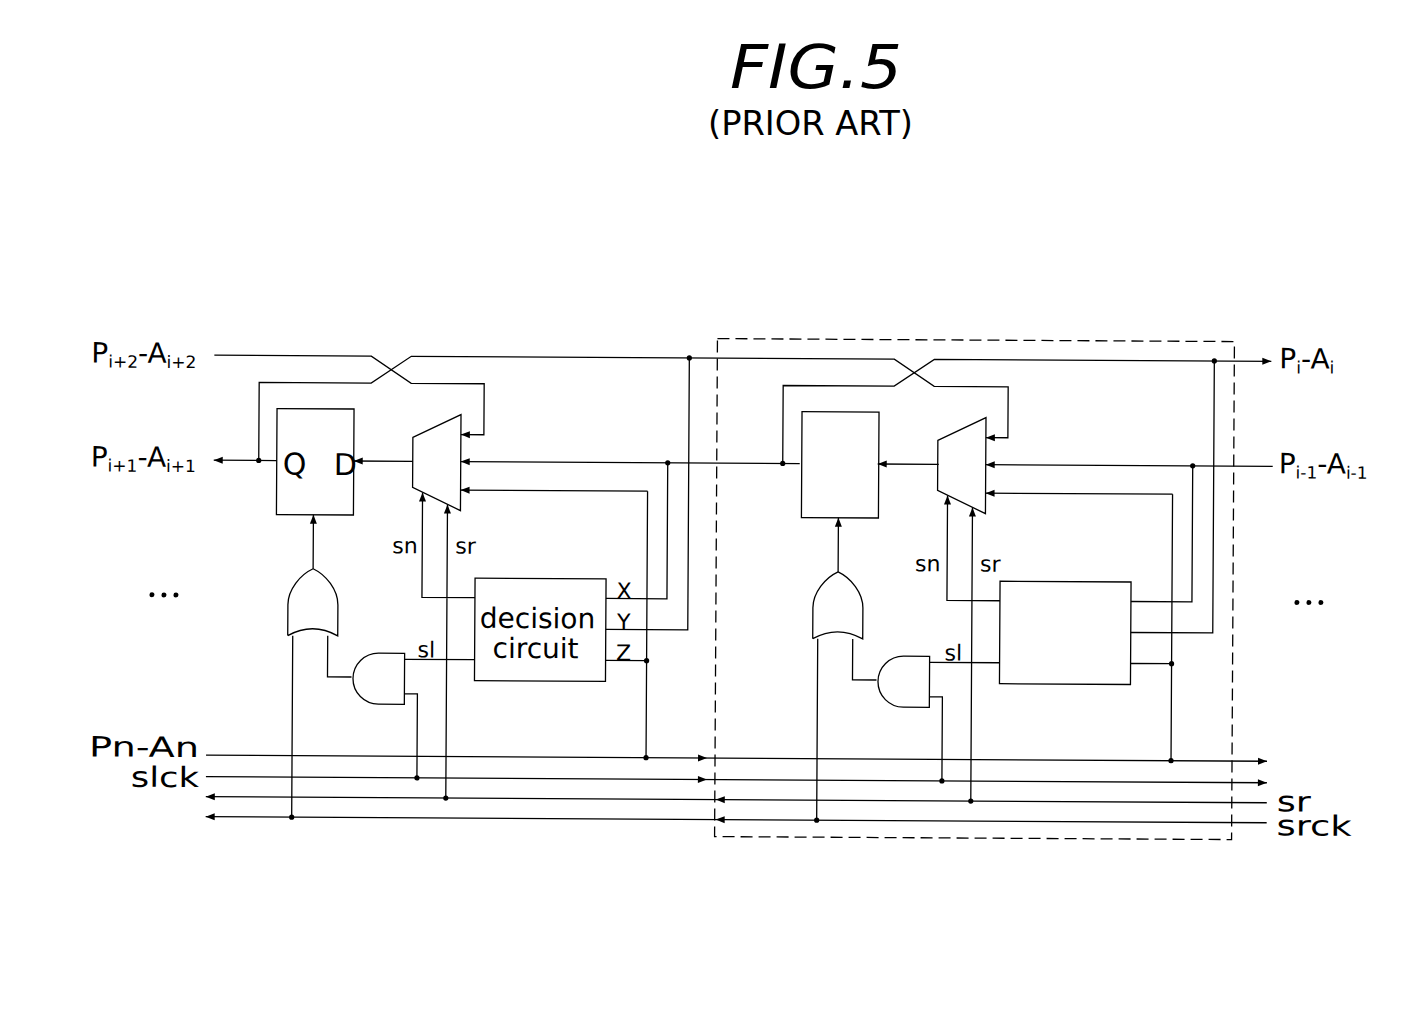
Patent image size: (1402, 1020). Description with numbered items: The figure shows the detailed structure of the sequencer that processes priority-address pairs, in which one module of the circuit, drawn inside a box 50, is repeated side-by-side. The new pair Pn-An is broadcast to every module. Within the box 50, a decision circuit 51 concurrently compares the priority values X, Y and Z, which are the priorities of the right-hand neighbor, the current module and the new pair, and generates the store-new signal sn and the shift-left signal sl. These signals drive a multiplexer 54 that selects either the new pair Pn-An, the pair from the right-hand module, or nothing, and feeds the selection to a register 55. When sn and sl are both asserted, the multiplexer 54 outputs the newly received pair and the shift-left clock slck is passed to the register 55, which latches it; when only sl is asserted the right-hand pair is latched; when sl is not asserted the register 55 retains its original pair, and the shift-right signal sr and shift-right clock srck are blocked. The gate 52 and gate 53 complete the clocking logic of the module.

The box 50 is at (992, 338).
The decision circuit 51 is at (1070, 580).
The AND gate 52 is at (915, 655).
The OR gate 53 is at (820, 584).
The multiplexer 54 is at (962, 428).
The register 55 is at (801, 497).